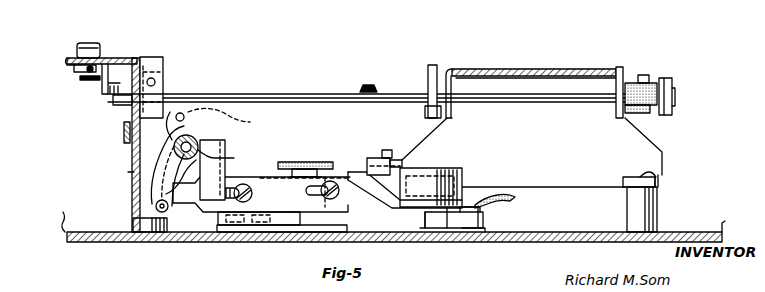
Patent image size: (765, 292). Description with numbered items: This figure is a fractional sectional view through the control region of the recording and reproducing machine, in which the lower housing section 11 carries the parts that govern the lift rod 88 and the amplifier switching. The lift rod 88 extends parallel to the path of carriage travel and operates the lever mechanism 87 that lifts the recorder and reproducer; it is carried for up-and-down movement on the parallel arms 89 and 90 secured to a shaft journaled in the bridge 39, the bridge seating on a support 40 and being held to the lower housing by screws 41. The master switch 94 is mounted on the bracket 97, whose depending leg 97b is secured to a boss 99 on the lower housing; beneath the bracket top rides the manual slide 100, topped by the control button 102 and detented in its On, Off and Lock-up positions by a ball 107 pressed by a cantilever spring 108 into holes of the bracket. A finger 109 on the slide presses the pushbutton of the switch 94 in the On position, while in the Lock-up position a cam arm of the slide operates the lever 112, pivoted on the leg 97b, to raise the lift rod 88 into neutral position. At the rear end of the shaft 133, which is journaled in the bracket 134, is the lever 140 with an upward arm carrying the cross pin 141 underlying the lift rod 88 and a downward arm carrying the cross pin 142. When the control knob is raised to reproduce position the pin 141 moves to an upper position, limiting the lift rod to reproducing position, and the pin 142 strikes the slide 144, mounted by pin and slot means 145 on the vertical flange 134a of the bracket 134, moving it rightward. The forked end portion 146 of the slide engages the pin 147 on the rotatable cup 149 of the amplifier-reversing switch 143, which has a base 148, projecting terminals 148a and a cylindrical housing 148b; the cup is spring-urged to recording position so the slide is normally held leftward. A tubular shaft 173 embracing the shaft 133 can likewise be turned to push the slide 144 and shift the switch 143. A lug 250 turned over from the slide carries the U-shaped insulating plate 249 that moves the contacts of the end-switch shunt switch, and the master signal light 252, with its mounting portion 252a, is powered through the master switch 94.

The base plate 11 is at (108, 243).
The bridge 39 is at (628, 52).
The post 40 is at (658, 185).
The screws 41 is at (660, 174).
The lever mechanism 87 is at (369, 85).
The lift rod 88 is at (314, 94).
The parallel arm 89 is at (432, 65).
The parallel arm 90 is at (673, 76).
The master switch 94 is at (166, 54).
The bracket 97 is at (68, 59).
The depending leg 97b is at (128, 172).
The boss 99 is at (138, 226).
The manual slide 100 is at (74, 70).
The control button 102 is at (86, 42).
The ball 107 is at (97, 75).
The cantilever spring 108 is at (80, 78).
The finger 109 is at (126, 58).
The lever 112 is at (124, 133).
The shaft 133 is at (178, 148).
The bracket 134 is at (212, 215).
The vertical flange 134a is at (267, 238).
The lever 140 is at (175, 114).
The cross pin 141 is at (234, 120).
The cross pin 142 is at (156, 206).
The amplifier-reversing switch 143 is at (462, 163).
The slide 144 is at (255, 180).
The pin and slot means 145 is at (244, 179).
The forked end portion 146 is at (370, 160).
The pin 147 is at (380, 150).
The base 148 is at (446, 228).
The terminals 148a is at (495, 210).
The cylindrical housing 148b is at (475, 190).
The rotatable cup 149 is at (461, 174).
The tubular shaft 173 is at (182, 147).
The insulating plate 249 is at (309, 168).
The lug 250 is at (301, 162).
The master signal light 252 is at (646, 111).
The cap 252a is at (655, 70).